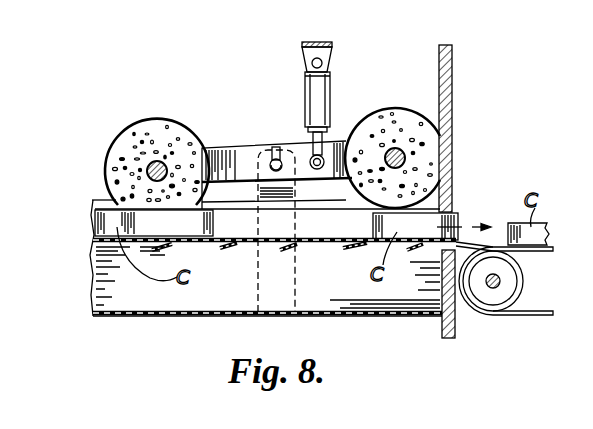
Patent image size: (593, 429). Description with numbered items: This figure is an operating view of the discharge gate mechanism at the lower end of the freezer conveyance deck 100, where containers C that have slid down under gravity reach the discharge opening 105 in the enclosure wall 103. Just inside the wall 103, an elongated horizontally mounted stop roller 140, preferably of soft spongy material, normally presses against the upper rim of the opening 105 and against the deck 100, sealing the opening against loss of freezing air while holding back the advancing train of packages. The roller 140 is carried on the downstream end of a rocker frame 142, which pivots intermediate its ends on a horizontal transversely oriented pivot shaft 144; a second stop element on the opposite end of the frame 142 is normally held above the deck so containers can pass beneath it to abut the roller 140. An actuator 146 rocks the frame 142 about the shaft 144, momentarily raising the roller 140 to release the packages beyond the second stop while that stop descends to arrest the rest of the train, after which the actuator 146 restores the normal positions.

The conveyance deck 100 is at (324, 231).
The wall 103 is at (453, 110).
The discharge opening 105 is at (452, 208).
The stop roller 140 is at (152, 128).
The rocker frame 142 is at (235, 157).
The pivot shaft 144 is at (274, 147).
The actuator 146 is at (325, 88).